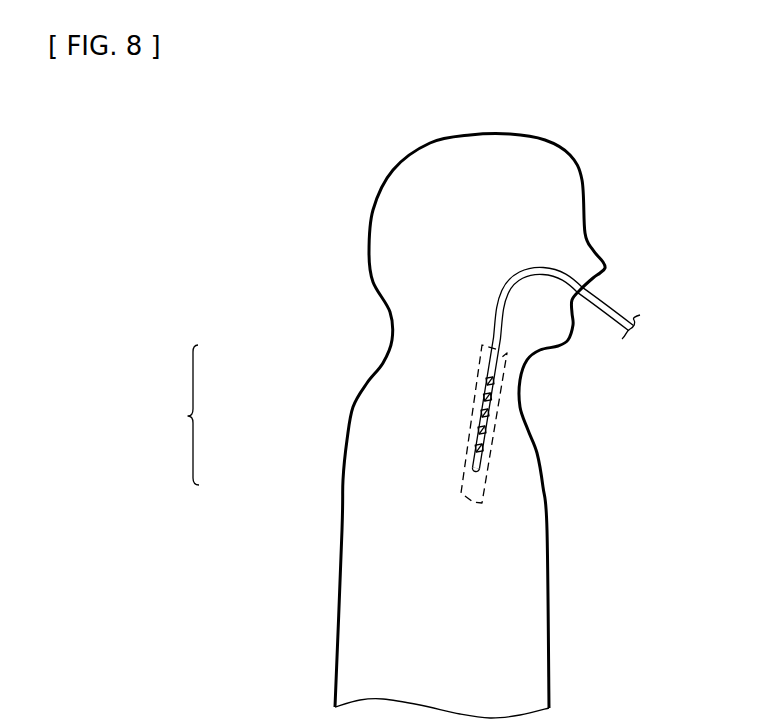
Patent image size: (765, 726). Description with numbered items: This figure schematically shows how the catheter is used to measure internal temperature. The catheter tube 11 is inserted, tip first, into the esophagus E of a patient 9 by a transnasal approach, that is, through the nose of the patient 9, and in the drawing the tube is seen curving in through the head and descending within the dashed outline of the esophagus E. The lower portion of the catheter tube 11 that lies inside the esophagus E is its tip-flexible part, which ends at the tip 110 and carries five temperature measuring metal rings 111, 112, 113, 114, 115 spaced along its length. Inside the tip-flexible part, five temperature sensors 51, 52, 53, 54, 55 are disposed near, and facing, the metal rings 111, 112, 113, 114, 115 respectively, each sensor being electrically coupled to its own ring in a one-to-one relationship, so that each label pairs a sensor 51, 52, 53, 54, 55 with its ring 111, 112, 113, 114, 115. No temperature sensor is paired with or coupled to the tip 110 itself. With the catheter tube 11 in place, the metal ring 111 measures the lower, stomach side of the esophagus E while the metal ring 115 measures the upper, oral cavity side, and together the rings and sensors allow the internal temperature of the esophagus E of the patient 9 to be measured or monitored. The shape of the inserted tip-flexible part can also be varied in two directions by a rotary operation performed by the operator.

The patient 9 is at (617, 140).
The catheter tube 11 is at (609, 307).
The tip 110 is at (403, 415).
The metal ring 111 is at (347, 464).
The metal ring 112 is at (349, 441).
The metal ring 113 is at (350, 416).
The metal ring 114 is at (352, 388).
The metal ring 115 is at (353, 365).
The temperature sensor 51 is at (347, 464).
The temperature sensor 52 is at (478, 430).
The temperature sensor 53 is at (481, 413).
The temperature sensor 54 is at (484, 397).
The temperature sensor 55 is at (486, 381).
The esophagus E is at (499, 402).